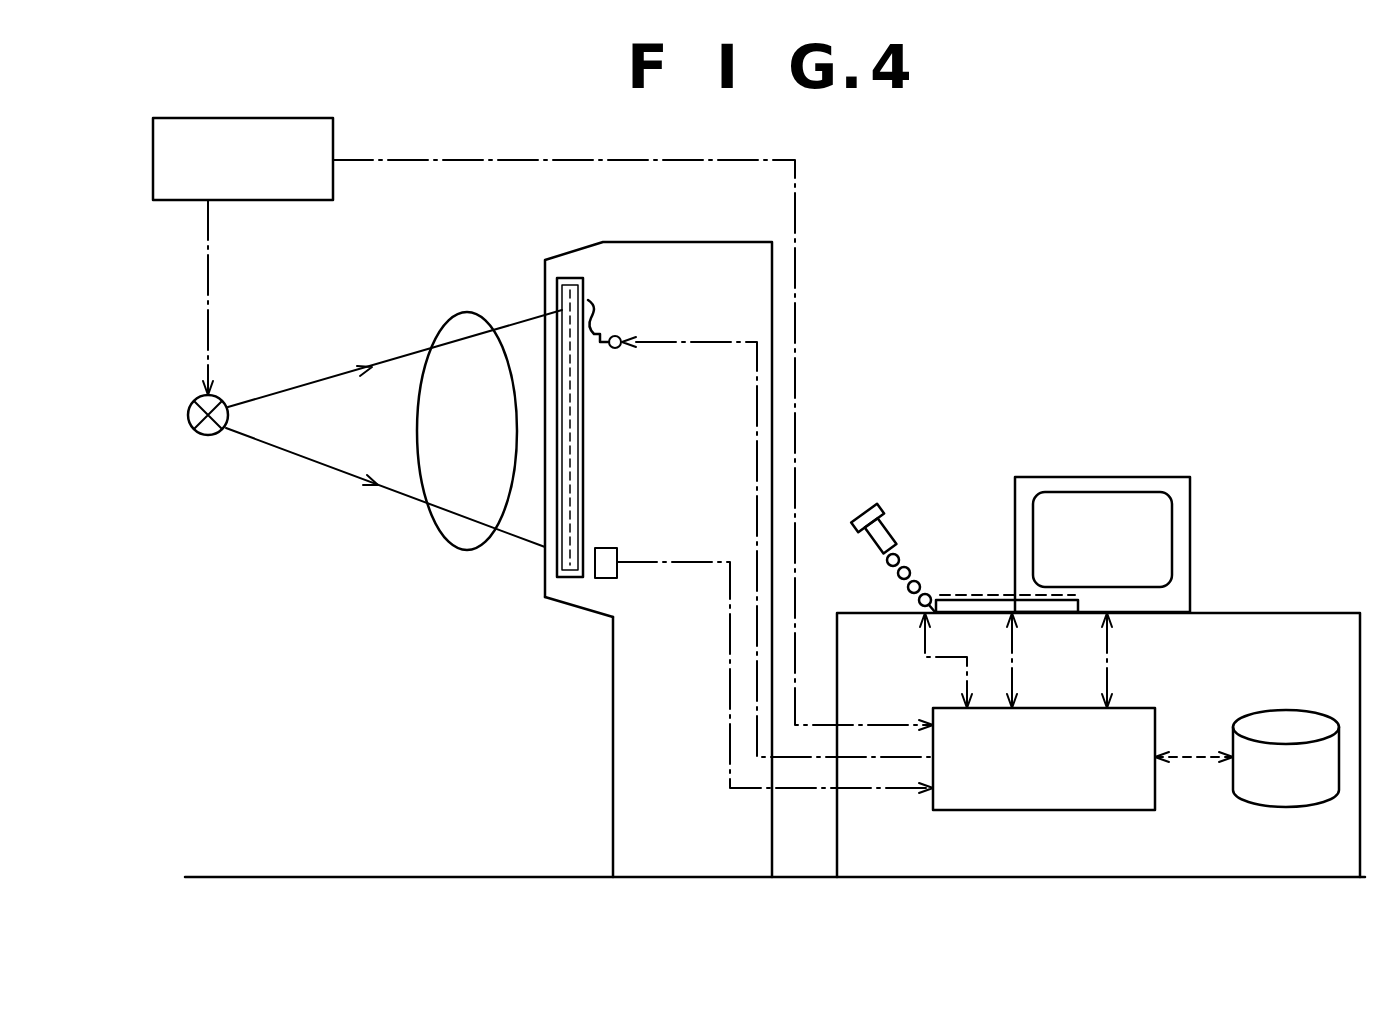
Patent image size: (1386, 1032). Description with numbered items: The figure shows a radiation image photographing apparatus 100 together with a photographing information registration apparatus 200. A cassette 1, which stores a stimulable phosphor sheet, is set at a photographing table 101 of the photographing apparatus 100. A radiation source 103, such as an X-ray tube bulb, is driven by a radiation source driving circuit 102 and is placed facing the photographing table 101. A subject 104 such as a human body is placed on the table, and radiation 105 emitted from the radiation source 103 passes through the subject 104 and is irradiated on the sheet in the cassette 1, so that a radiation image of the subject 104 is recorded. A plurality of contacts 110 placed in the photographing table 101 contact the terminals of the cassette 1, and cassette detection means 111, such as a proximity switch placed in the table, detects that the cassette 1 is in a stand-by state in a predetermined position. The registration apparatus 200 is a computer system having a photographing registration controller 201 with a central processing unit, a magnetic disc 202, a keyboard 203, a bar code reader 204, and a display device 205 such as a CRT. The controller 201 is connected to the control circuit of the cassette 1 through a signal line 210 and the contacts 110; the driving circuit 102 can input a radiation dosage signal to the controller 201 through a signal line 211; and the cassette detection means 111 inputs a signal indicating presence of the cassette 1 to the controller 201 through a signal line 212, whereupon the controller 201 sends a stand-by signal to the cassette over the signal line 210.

The cassette 1 is at (568, 272).
The radiation image photographing apparatus 100 is at (458, 640).
The photographing table 101 is at (545, 283).
The radiation source driving circuit 102 is at (287, 203).
The radiation source 103 is at (200, 440).
The subject 104 is at (453, 545).
The radiation 105 is at (308, 462).
The contacts 110 is at (592, 325).
The cassette detection means 111 is at (612, 617).
The photographing information registration apparatus 200 is at (1118, 432).
The photographing registration controller 201 is at (1020, 812).
The magnetic disc 202 is at (1283, 803).
The keyboard 203 is at (972, 595).
The bar code reader 204 is at (880, 508).
The display device 205 is at (1160, 538).
The signal line 210 is at (757, 370).
The signal line 211 is at (797, 262).
The signal line 212 is at (730, 752).